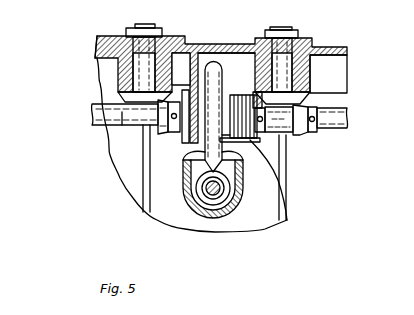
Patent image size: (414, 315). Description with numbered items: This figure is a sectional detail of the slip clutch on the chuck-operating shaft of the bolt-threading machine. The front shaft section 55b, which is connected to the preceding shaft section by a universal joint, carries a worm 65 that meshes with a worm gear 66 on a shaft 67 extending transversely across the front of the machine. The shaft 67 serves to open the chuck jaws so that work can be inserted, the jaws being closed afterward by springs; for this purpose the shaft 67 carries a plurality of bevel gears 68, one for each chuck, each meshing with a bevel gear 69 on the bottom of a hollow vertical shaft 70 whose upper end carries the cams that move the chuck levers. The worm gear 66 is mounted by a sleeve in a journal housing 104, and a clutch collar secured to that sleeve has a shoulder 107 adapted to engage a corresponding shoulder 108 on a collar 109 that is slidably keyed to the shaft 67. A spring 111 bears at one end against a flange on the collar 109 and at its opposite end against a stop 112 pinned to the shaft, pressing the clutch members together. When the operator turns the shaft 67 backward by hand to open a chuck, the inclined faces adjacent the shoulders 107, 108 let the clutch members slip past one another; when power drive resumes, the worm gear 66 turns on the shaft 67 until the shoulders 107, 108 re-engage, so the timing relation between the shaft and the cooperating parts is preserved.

The front shaft section 55b is at (232, 204).
The worm 65 is at (205, 193).
The worm gear 66 is at (214, 62).
The shaft 67 is at (95, 122).
The bevel gear 68 is at (155, 130).
The bevel gear 69 is at (118, 91).
The hollow vertical shaft 70 is at (140, 60).
The journal housing 104 is at (198, 60).
The shoulder 107 is at (232, 115).
The shoulder 108 is at (234, 110).
The collar 109 is at (289, 133).
The spring 111 is at (258, 138).
The stop 112 is at (308, 103).